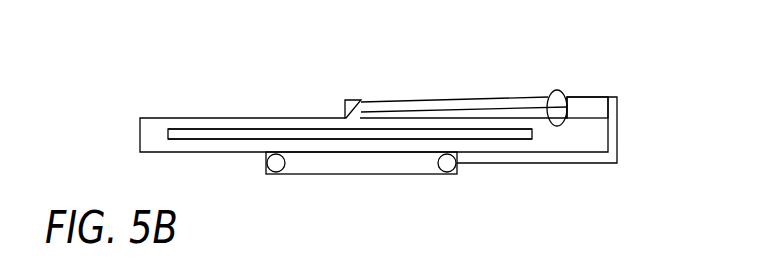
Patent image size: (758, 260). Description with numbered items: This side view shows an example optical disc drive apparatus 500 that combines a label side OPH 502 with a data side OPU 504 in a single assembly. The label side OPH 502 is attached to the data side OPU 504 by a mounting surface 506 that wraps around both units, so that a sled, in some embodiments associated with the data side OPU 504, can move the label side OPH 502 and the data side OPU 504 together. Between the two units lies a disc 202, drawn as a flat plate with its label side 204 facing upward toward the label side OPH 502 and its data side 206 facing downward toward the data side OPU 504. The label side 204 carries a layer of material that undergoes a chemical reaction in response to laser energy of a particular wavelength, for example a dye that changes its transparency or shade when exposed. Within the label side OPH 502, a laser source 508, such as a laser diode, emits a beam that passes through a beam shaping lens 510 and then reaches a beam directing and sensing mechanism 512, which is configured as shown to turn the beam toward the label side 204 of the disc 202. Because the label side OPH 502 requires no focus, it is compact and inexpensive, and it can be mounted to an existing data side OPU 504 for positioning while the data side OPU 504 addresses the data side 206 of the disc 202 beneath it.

The optical disc drive apparatus 500 is at (243, 58).
The label side OPH 502 is at (622, 56).
The data side OPU 504 is at (383, 189).
The mounting surface 506 is at (619, 125).
The laser source 508 is at (592, 96).
The beam shaping lens 510 is at (554, 90).
The beam directing and sensing mechanism 512 is at (363, 93).
The disc 202 is at (168, 133).
The label side 204 is at (207, 130).
The data side 206 is at (225, 140).